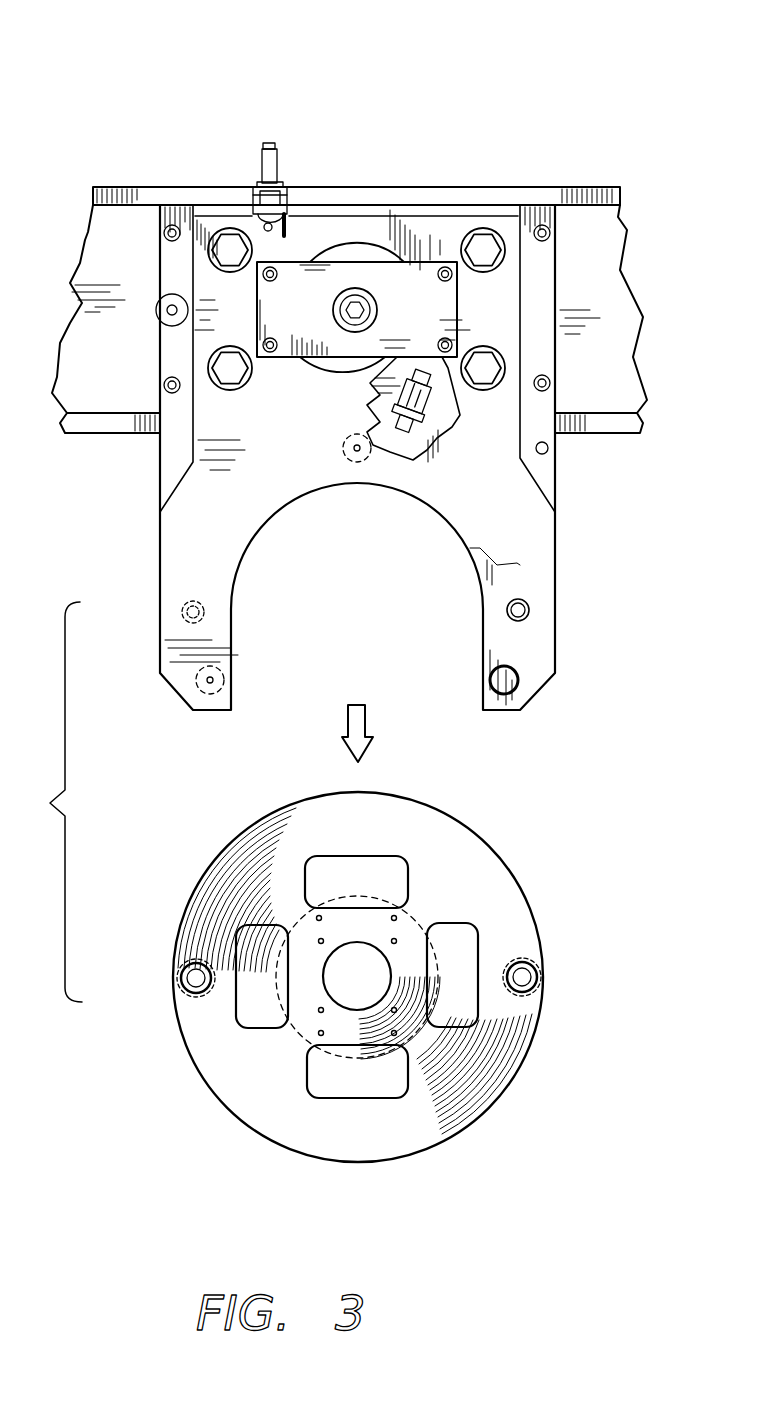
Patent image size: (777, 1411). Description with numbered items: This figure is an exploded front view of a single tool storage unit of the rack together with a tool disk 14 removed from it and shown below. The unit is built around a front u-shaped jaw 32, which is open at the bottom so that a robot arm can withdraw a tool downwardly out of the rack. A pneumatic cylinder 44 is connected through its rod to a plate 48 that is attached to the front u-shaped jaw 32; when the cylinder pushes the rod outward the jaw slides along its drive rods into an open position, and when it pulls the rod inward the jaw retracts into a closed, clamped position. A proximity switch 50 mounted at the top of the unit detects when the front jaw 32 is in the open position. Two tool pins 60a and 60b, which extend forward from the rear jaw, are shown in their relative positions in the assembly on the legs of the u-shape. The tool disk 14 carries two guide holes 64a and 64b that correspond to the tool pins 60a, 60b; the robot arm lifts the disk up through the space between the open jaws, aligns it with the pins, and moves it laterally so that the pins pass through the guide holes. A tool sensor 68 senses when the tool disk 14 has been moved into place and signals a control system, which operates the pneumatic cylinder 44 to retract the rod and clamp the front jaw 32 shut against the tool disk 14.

The tool disk 14 is at (510, 1017).
The front u-shaped jaw 32 is at (533, 540).
The pneumatic cylinder 44 is at (357, 242).
The plate 48 is at (297, 278).
The proximity switch 50 is at (272, 143).
The tool pin 60a is at (520, 612).
The tool pin 60b is at (190, 600).
The guide hole 64a is at (522, 977).
The guide hole 64b is at (197, 977).
The tool sensor 68 is at (452, 430).